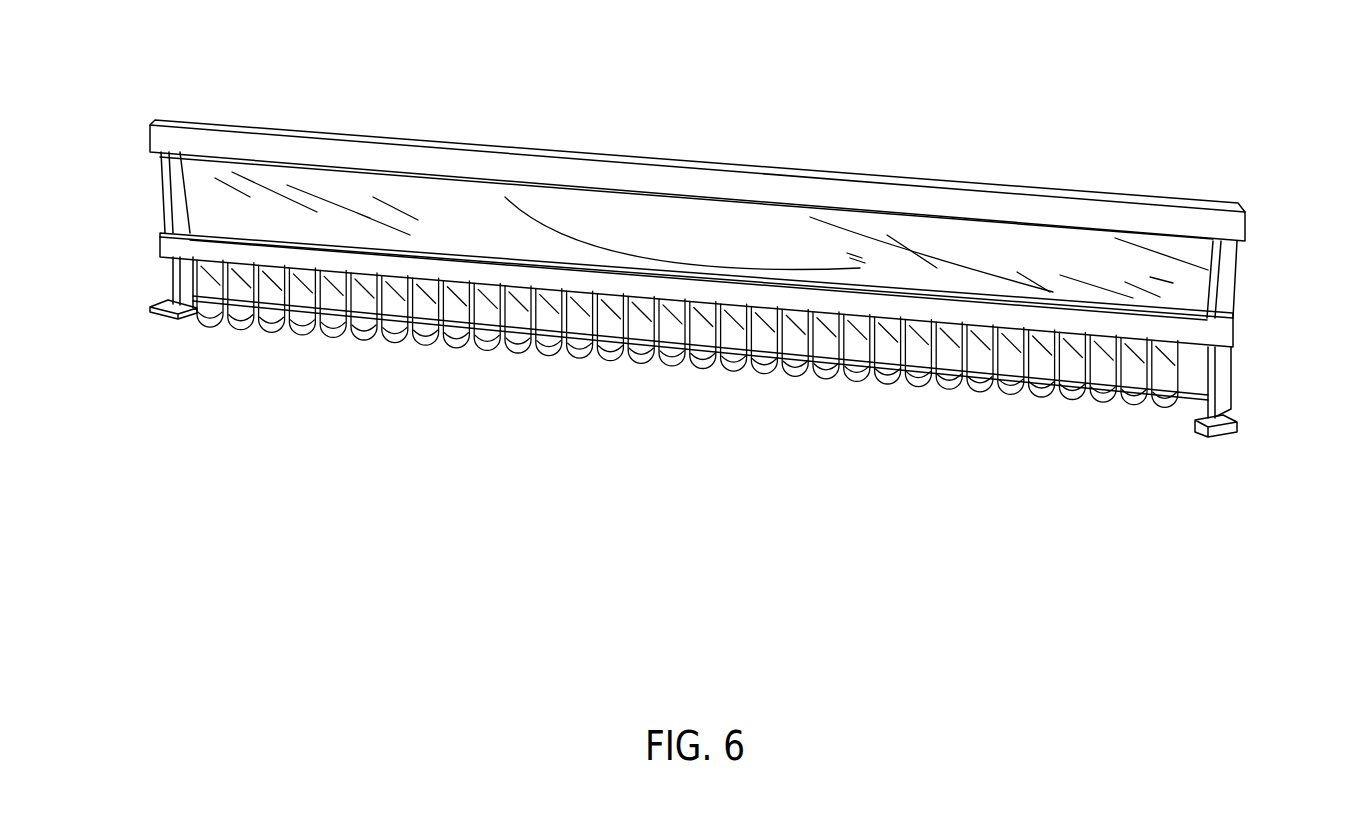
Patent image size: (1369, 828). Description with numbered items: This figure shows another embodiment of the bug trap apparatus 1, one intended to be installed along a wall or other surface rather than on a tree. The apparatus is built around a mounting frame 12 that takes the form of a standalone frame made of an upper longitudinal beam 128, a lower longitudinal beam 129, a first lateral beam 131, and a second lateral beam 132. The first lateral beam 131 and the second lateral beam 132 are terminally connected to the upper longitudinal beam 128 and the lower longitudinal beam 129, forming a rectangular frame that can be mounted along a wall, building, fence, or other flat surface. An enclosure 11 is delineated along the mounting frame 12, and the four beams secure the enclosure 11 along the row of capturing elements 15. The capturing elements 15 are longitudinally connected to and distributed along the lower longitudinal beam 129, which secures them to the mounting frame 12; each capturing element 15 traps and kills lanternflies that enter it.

The bug trap apparatus 1 is at (509, 63).
The enclosure 11 is at (1050, 238).
The mounting frame 12 is at (769, 132).
The upper longitudinal beam 128 is at (402, 133).
The lower longitudinal beam 129 is at (158, 238).
The first lateral beam 131 is at (158, 190).
The second lateral beam 132 is at (1235, 293).
The capturing element 15 is at (1075, 405).